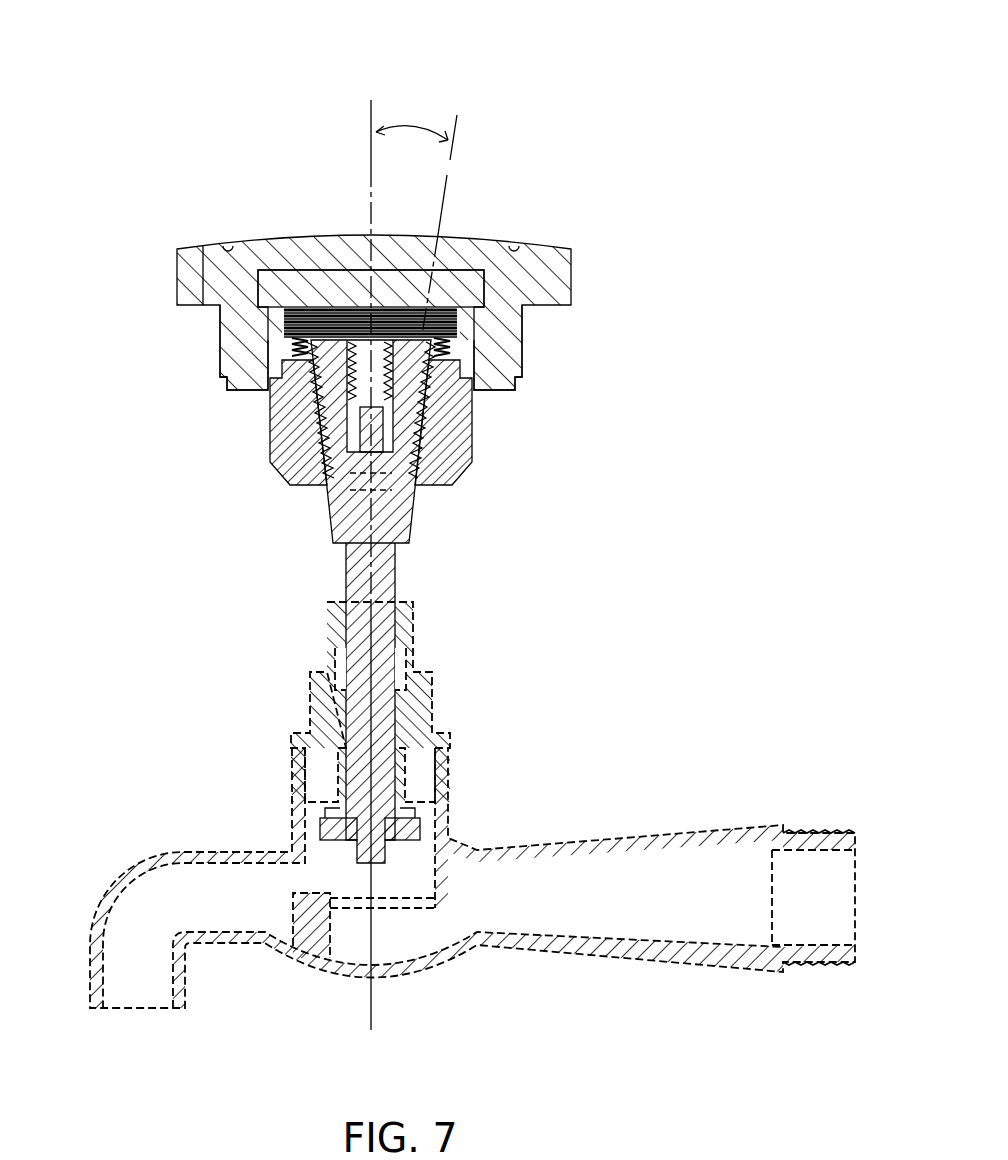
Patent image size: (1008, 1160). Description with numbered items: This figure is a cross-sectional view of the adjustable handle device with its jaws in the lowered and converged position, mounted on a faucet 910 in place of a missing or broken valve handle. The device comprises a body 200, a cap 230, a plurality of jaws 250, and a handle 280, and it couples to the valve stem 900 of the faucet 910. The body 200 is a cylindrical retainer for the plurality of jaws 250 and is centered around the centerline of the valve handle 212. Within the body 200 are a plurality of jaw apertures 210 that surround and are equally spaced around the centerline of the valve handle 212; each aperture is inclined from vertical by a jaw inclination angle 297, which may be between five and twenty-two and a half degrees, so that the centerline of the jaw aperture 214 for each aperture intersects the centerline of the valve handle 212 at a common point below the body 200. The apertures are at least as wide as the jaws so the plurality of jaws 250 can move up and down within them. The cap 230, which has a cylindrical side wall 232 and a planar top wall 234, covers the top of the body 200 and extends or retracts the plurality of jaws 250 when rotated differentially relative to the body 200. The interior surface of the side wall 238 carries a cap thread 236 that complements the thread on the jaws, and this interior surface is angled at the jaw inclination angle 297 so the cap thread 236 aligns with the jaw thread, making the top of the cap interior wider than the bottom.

The body 200 is at (270, 456).
The plurality of jaw apertures 210 is at (440, 413).
The centerline of the valve handle 212 is at (371, 162).
The centerline of the jaw aperture 214 is at (452, 157).
The cap 230 is at (220, 360).
The side wall 232 is at (467, 342).
The planar top wall 234 is at (453, 285).
The cap thread 236 is at (453, 317).
The interior surface of the side wall 238 is at (293, 327).
The plurality of jaws 250 is at (333, 512).
The handle 280 is at (223, 268).
The jaw inclination angle 297 is at (412, 125).
The valve stem 900 is at (395, 572).
The faucet 910 is at (593, 850).